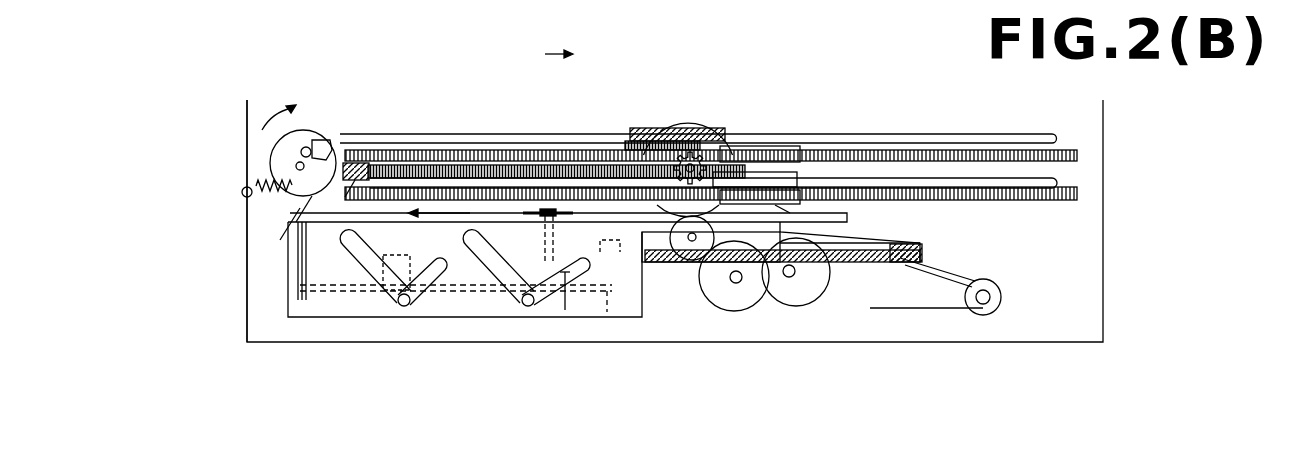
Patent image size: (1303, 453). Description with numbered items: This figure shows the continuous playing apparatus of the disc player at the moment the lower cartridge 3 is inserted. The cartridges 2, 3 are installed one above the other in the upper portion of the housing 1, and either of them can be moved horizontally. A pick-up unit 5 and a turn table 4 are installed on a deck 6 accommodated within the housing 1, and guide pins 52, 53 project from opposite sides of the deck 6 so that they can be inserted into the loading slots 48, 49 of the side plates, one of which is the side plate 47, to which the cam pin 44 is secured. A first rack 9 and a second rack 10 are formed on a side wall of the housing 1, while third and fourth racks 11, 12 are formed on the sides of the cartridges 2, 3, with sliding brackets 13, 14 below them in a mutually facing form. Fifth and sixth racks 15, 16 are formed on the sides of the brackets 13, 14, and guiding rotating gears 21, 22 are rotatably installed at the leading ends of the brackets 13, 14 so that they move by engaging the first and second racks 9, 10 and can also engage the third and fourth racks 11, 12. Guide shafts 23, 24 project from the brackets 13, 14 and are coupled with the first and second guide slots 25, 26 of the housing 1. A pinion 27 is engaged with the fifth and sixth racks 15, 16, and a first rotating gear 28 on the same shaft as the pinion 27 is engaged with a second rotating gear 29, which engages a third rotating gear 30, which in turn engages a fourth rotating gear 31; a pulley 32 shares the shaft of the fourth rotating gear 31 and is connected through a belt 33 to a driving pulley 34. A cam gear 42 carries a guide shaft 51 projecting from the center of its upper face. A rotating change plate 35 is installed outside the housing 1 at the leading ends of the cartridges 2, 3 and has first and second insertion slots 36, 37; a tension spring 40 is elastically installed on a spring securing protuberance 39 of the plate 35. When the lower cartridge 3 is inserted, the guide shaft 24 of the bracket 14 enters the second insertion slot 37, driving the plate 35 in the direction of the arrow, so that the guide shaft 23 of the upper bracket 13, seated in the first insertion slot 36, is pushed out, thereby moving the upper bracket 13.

The housing 1 is at (405, 64).
The cartridge 2 is at (843, 120).
The cartridge 3 is at (286, 288).
The turn table 4 is at (543, 240).
The pick-up unit 5 is at (410, 259).
The deck 6 is at (465, 295).
The first rack 9 is at (711, 140).
The second rack 10 is at (945, 227).
The third rack 11 is at (579, 116).
The fourth rack 12 is at (556, 123).
The sliding bracket 13 is at (711, 115).
The sliding bracket 14 is at (376, 139).
The fifth rack 15 is at (675, 105).
The sixth rack 16 is at (760, 122).
The guiding rotating gear 21 is at (755, 131).
The guiding rotating gear 22 is at (796, 129).
The guide shaft 23 is at (320, 114).
The guide shaft 24 is at (611, 119).
The first guide slot 25 is at (698, 114).
The second guide slot 26 is at (713, 216).
The pinion 27 is at (696, 123).
The first rotating gear 28 is at (688, 124).
The second rotating gear 29 is at (681, 298).
The third rotating gear 30 is at (734, 315).
The fourth rotating gear 31 is at (756, 341).
The pulley 32 is at (796, 314).
The belt 33 is at (926, 324).
The driving pulley 34 is at (987, 334).
The rotating change plate 35 is at (259, 163).
The first insertion slot 36 is at (356, 123).
The second insertion slot 37 is at (253, 278).
The spring securing protuberance 39 is at (218, 222).
The tension spring 40 is at (236, 176).
The cam gear 42 is at (781, 302).
The cam pin 44 is at (605, 301).
The side plate 47 is at (437, 302).
The loading slot 48 is at (357, 344).
The loading slot 49 is at (563, 326).
The guide shaft 51 is at (828, 127).
The guide pin 52 is at (420, 317).
The guide pin 53 is at (552, 319).